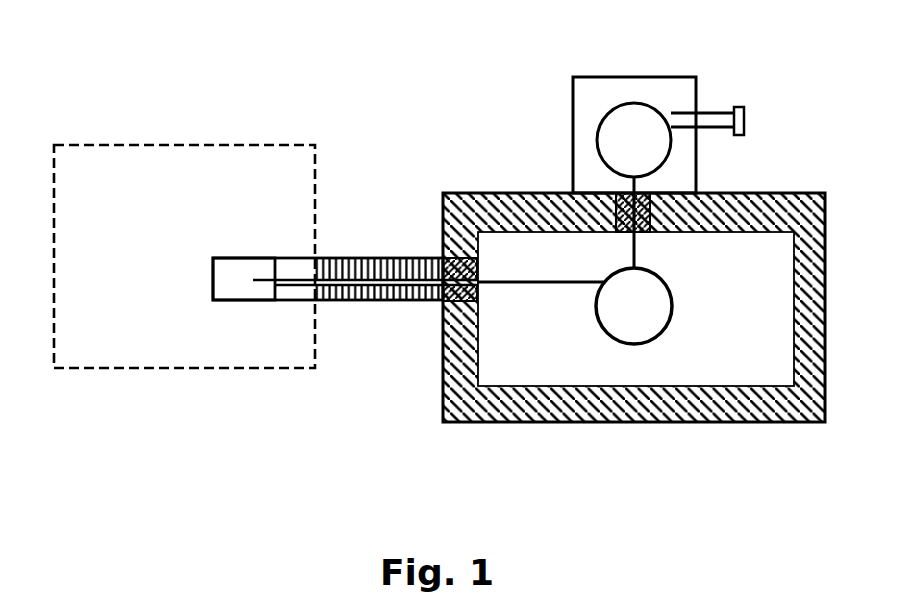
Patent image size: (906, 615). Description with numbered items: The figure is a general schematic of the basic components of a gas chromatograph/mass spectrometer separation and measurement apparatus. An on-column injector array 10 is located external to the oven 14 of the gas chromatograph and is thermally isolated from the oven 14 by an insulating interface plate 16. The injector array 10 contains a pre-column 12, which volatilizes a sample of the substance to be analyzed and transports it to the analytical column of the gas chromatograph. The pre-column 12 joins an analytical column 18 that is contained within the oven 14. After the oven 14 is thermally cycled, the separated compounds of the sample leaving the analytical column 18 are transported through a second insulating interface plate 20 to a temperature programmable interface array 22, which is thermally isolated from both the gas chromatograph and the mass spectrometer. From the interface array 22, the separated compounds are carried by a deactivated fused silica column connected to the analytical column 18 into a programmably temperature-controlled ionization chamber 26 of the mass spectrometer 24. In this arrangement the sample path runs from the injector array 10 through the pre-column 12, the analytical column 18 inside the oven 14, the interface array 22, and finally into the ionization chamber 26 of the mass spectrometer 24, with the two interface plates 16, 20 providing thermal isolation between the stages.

The on-column injector array 10 is at (597, 88).
The pre-column 12 is at (672, 150).
The oven 14 is at (779, 406).
The insulating interface plate 16 is at (622, 195).
The analytical column 18 is at (631, 344).
The second insulating interface plate 20 is at (452, 255).
The temperature programmable interface array 22 is at (386, 301).
The mass spectrometer 24 is at (92, 148).
The ionization chamber 26 is at (225, 300).